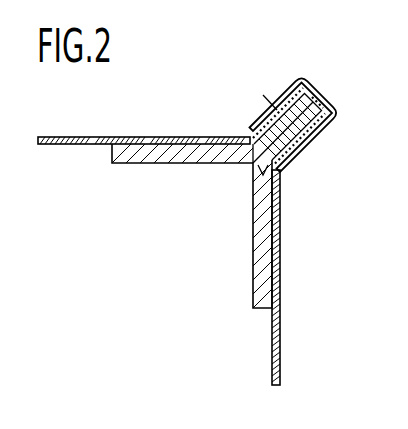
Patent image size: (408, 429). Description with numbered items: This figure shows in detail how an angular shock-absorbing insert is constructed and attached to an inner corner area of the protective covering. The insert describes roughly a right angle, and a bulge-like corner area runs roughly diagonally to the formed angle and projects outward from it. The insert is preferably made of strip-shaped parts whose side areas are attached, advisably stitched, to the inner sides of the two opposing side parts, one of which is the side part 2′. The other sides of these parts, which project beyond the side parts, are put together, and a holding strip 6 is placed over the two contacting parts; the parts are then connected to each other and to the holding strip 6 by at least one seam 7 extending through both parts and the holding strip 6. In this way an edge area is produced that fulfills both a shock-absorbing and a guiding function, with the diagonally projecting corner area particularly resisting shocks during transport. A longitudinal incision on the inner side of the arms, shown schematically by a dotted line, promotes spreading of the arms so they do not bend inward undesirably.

The side part 2′ is at (143, 137).
The holding strip 6 is at (334, 112).
The seam 7 is at (306, 140).